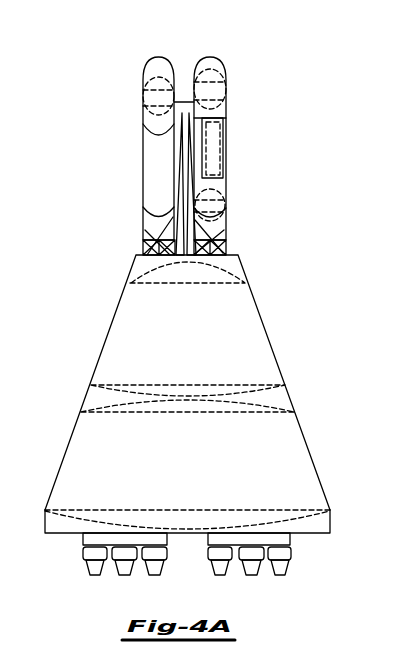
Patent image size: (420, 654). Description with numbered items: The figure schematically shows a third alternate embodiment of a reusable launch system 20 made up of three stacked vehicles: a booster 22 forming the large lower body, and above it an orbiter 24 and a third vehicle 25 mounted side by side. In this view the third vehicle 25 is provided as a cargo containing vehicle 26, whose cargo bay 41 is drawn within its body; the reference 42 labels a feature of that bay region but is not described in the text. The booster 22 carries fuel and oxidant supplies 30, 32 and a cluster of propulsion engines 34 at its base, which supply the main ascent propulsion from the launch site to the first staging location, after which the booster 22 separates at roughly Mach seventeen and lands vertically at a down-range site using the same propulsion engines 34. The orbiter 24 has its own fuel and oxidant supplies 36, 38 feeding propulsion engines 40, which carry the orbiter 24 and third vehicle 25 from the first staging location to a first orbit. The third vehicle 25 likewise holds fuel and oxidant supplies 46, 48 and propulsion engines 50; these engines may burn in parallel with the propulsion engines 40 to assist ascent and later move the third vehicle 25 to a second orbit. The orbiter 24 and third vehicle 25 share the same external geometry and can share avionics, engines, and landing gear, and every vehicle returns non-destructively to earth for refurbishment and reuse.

The reusable launch system 20 is at (316, 146).
The booster 22 is at (280, 372).
The orbiter 24 is at (160, 62).
The third vehicle 25 is at (217, 63).
The cargo containing vehicle 26 is at (208, 61).
The fuel supply 30 is at (297, 468).
The oxidant supply 32 is at (227, 328).
The propulsion engines 34 is at (95, 575).
The fuel supply 36 is at (157, 176).
The oxidant supply 38 is at (143, 107).
The propulsion engines 40 is at (143, 246).
The cargo bay 41 is at (226, 164).
The payload compartment 42 is at (226, 139).
The fuel supply 46 is at (231, 211).
The oxidant supply 48 is at (228, 89).
The propulsion engines 50 is at (230, 254).